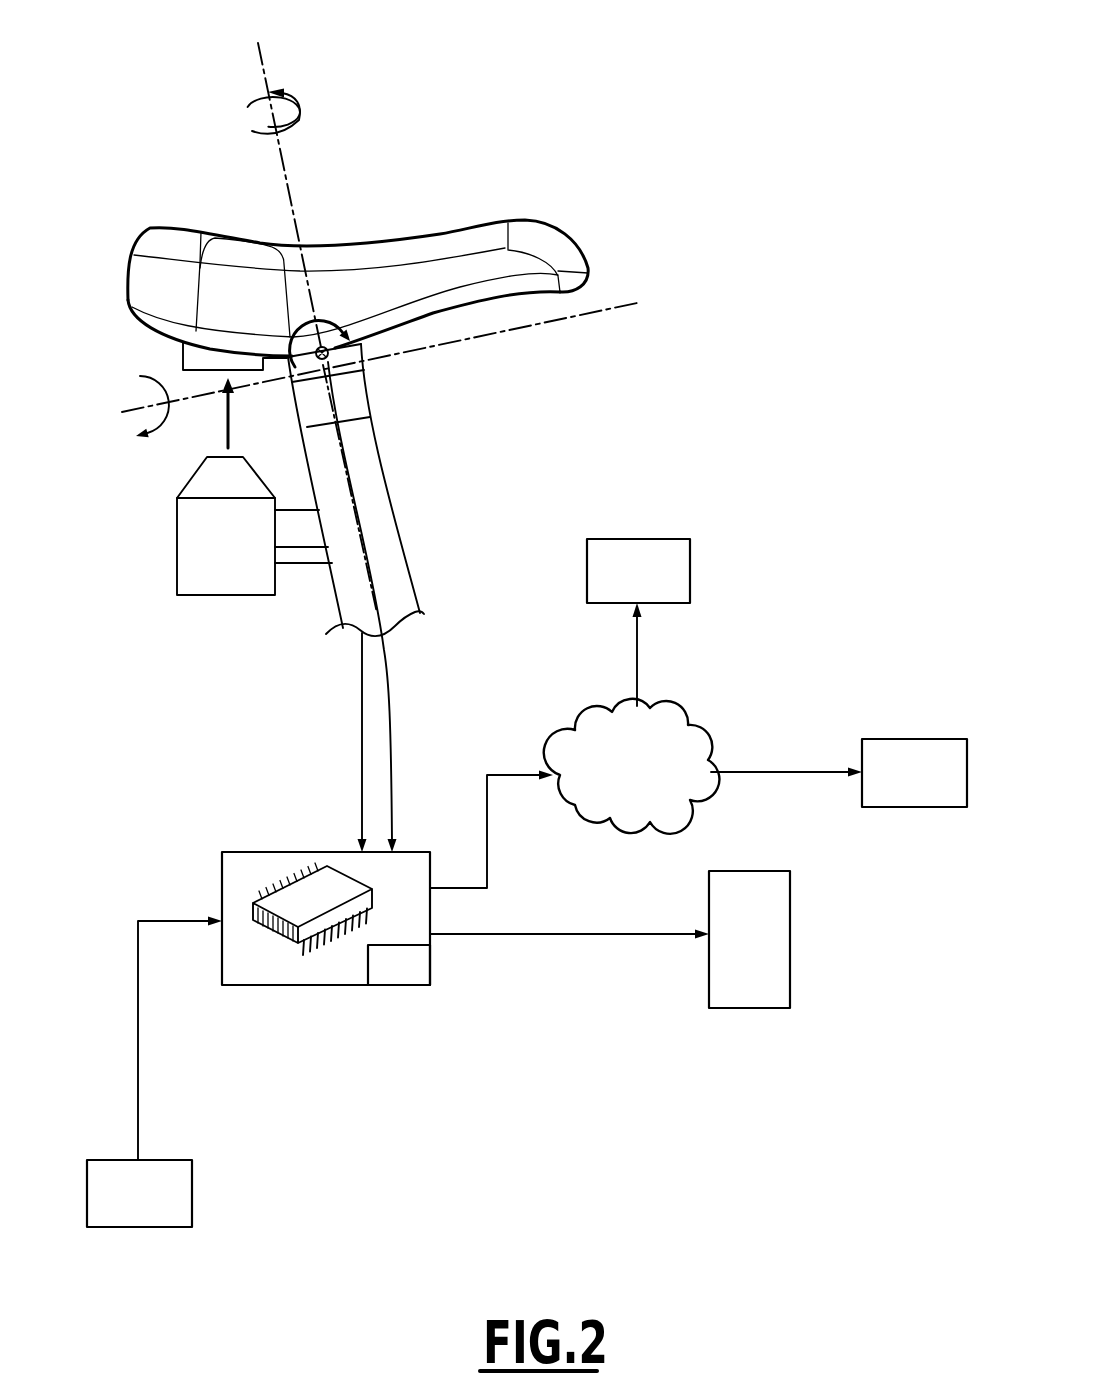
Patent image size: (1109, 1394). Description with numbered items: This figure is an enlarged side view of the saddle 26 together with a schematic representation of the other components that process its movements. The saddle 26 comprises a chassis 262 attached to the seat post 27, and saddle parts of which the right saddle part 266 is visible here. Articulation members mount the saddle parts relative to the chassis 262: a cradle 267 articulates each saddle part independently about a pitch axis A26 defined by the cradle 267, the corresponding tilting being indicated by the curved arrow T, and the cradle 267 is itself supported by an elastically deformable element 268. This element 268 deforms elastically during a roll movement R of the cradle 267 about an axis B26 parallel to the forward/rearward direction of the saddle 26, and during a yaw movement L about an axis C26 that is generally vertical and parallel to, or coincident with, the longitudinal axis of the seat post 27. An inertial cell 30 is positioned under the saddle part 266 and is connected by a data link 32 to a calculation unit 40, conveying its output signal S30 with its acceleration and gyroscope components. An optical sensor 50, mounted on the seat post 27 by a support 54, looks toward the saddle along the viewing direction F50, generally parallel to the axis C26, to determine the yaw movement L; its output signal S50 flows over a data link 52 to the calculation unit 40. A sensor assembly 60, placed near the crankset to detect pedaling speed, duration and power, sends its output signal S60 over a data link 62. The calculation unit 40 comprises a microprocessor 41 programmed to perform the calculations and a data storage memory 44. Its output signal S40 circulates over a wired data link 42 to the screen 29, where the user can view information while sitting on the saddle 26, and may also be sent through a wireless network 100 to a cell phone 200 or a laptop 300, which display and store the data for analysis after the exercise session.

The saddle 26 is at (346, 234).
The right saddle part 266 is at (183, 247).
The cradle 267 is at (395, 341).
The elastically deformable element 268 is at (357, 368).
The chassis 262 is at (357, 403).
The seat post 27 is at (410, 490).
The inertial cell 30 is at (183, 353).
The optical sensor 50 is at (188, 548).
The support 54 is at (300, 557).
The data link 52 is at (362, 718).
The data link 32 is at (387, 720).
The calculation unit 40 is at (327, 960).
The microprocessor 41 is at (296, 938).
The data storage memory 44 is at (400, 970).
The wired data link 42 is at (517, 933).
The screen 29 is at (749, 939).
The wireless network 100 is at (574, 793).
The cell phone 200 is at (638, 622).
The laptop 300 is at (839, 773).
The sensor assembly 60 is at (139, 1193).
The data link 62 is at (138, 1072).
The axis C26 is at (281, 181).
The yaw movement L is at (275, 99).
The pitch axis A26 is at (350, 342).
The tilt direction T is at (320, 333).
The axis B26 is at (358, 367).
The roll movement R is at (147, 402).
The viewing direction F50 is at (248, 413).
The output signal S50 is at (339, 829).
The output signal S30 is at (414, 829).
The output signal S60 is at (177, 910).
The output signal S40 is at (603, 962).